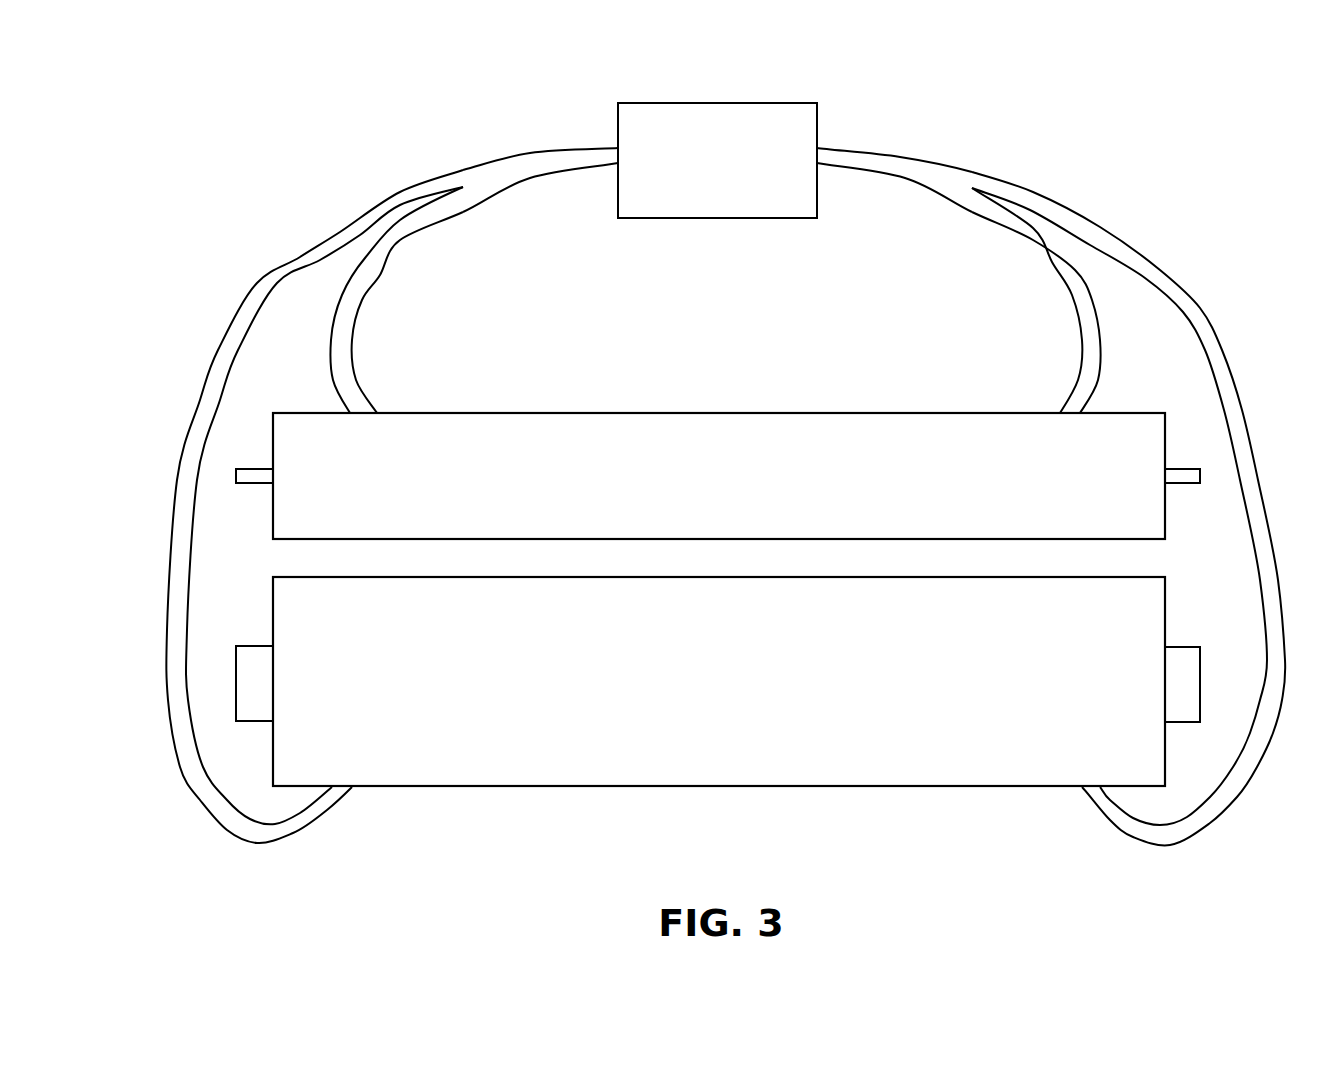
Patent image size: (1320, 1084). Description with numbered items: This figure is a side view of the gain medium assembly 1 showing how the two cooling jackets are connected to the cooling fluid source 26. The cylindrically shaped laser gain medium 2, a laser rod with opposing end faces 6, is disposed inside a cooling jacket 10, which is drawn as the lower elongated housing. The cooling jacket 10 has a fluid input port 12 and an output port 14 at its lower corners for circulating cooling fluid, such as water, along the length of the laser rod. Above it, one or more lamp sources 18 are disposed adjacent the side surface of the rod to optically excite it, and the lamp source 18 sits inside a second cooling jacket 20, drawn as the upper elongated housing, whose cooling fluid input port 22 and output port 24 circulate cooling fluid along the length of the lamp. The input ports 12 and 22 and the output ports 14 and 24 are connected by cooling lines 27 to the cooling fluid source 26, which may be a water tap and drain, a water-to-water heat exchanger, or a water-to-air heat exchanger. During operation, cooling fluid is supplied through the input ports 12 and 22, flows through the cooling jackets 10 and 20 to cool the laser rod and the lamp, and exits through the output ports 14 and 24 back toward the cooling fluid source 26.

The gain medium assembly 1 is at (731, 394).
The laser gain medium 2 is at (1174, 696).
The end faces 6 is at (236, 656).
The cooling jacket 10 is at (702, 704).
The fluid input port 12 is at (352, 789).
The output port 14 is at (1080, 789).
The lamp source 18 is at (258, 468).
The second cooling jacket 20 is at (702, 487).
The cooling fluid input port 22 is at (378, 410).
The output port 24 is at (1058, 410).
The cooling fluid source 26 is at (731, 205).
The cooling lines 27 is at (918, 162).